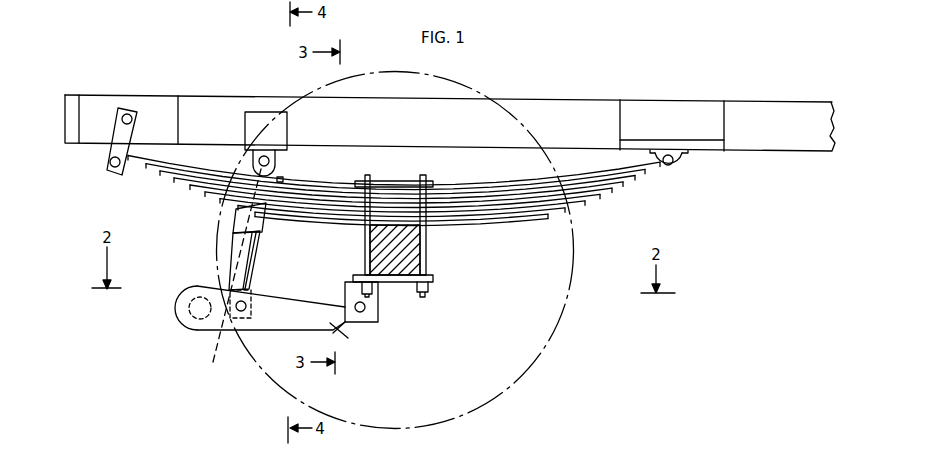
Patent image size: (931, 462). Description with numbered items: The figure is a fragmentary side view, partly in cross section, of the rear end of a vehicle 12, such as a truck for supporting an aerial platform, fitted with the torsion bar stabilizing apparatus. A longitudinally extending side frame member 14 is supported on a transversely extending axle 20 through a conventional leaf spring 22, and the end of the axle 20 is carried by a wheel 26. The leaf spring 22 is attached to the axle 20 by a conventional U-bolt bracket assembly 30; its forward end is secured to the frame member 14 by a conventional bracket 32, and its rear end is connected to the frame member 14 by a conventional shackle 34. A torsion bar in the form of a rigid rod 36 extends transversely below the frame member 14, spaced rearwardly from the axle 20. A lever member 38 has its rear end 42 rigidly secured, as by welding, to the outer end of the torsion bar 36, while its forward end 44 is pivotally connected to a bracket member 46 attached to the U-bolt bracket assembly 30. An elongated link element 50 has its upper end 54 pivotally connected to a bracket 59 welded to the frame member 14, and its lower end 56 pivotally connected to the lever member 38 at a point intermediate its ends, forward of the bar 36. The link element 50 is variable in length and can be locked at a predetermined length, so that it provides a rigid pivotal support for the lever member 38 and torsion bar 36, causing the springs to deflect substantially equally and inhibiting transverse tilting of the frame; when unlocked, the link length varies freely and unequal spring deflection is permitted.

The rear end of a vehicle 12 is at (628, 83).
The side frame member 14 is at (783, 108).
The axle 20 is at (410, 250).
The leaf spring 22 is at (502, 207).
The wheel 26 is at (558, 318).
The U-bolt bracket assembly 30 is at (366, 247).
The bracket 32 is at (699, 130).
The shackle 34 is at (103, 160).
The torsion bar 36 is at (186, 308).
The lever member 38 is at (288, 325).
The rear end of lever member 42 is at (200, 325).
The forward end of lever member 44 is at (348, 338).
The bracket member 46 is at (372, 312).
The link element 50 is at (212, 227).
The upper end of link element 54 is at (280, 173).
The lower end of link element 56 is at (233, 274).
The bracket 59 is at (283, 160).